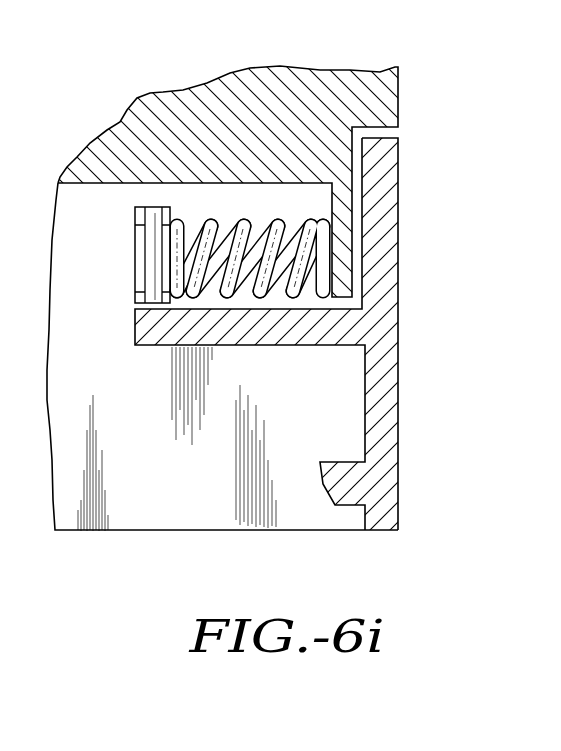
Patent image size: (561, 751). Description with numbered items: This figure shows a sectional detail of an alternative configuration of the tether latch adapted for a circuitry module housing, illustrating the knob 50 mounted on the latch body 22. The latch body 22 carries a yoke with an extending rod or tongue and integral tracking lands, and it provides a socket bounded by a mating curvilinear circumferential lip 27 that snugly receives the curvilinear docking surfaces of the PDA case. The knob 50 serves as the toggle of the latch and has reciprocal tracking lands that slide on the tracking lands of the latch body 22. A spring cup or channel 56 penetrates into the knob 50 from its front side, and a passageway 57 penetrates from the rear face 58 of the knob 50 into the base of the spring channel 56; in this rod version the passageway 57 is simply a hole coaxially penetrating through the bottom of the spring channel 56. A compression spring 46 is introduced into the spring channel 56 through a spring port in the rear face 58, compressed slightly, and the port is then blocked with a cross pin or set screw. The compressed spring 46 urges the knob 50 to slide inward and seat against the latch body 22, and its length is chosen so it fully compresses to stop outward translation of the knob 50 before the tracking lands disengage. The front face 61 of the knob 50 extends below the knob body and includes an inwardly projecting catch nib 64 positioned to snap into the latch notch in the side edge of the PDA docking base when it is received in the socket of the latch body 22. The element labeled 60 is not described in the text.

The latch body 22 is at (272, 66).
The mating curvilinear circumferential lip 27 is at (160, 532).
The compression spring 46 is at (288, 297).
The knob 50 is at (153, 347).
The spring cup or channel 56 is at (320, 208).
The passageway 57 is at (135, 283).
The rear face 58 is at (135, 216).
The plate inner member 60 is at (145, 247).
The front face 61 is at (398, 410).
The catch nib 64 is at (326, 486).